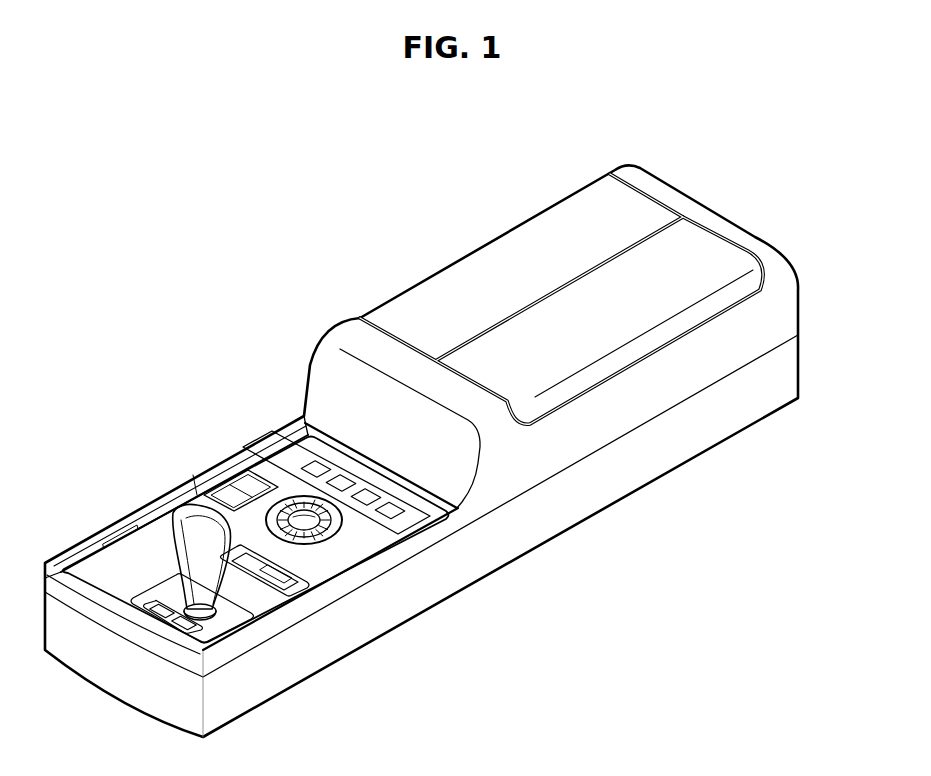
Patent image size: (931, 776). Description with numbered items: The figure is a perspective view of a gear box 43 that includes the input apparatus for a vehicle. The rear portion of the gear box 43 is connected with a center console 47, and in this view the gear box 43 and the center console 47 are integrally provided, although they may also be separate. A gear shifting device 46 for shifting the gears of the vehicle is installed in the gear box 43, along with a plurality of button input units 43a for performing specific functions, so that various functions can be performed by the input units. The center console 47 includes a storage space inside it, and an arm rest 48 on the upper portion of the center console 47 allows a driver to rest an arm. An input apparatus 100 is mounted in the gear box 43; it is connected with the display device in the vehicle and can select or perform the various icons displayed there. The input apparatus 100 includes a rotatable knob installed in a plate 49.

The gear box 43 is at (283, 620).
The button input units 43a is at (225, 493).
The gear shifting device 46 is at (180, 540).
The center console 47 is at (768, 322).
The arm rest 48 is at (690, 252).
The plate 49 is at (267, 463).
The input apparatus 100 is at (352, 527).